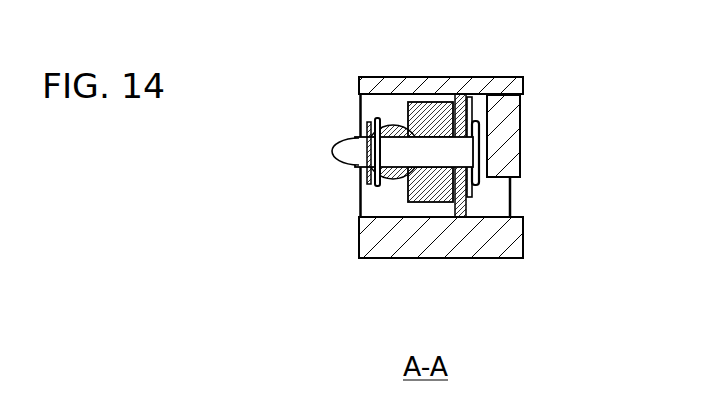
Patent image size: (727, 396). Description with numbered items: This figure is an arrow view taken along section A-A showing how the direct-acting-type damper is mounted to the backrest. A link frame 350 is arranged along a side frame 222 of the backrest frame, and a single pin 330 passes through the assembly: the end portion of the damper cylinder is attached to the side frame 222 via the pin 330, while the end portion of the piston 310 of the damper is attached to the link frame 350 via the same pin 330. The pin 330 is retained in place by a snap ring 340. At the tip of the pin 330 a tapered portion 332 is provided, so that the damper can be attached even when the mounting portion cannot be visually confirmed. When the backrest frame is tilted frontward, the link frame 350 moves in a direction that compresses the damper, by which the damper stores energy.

The side frame 222 is at (497, 252).
The piston 310 is at (388, 178).
The pin 330 is at (462, 154).
The tapered portion 332 is at (340, 152).
The snap ring 340 is at (377, 130).
The link frame 350 is at (427, 202).